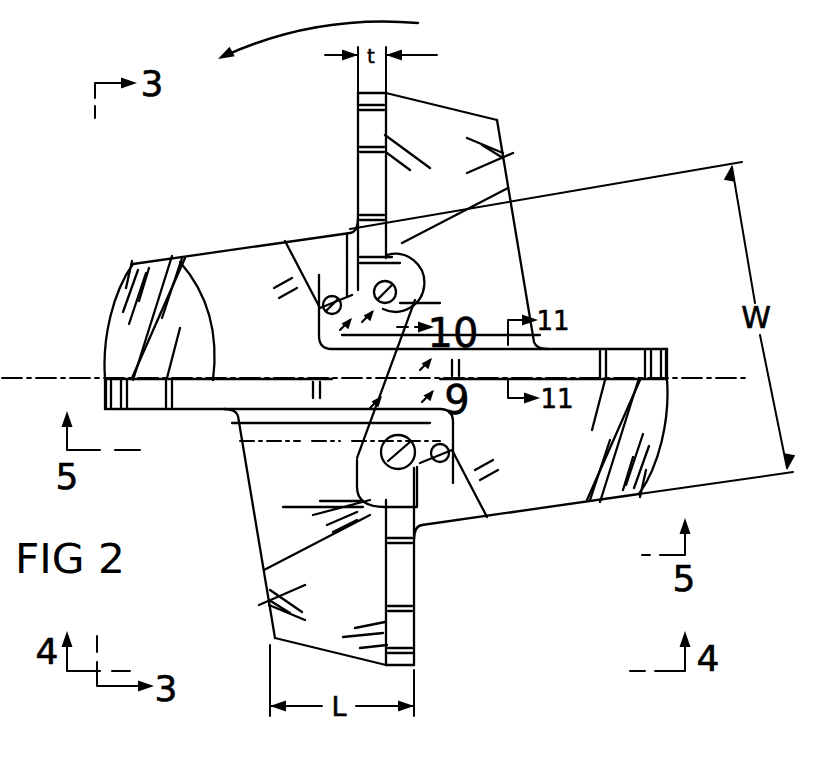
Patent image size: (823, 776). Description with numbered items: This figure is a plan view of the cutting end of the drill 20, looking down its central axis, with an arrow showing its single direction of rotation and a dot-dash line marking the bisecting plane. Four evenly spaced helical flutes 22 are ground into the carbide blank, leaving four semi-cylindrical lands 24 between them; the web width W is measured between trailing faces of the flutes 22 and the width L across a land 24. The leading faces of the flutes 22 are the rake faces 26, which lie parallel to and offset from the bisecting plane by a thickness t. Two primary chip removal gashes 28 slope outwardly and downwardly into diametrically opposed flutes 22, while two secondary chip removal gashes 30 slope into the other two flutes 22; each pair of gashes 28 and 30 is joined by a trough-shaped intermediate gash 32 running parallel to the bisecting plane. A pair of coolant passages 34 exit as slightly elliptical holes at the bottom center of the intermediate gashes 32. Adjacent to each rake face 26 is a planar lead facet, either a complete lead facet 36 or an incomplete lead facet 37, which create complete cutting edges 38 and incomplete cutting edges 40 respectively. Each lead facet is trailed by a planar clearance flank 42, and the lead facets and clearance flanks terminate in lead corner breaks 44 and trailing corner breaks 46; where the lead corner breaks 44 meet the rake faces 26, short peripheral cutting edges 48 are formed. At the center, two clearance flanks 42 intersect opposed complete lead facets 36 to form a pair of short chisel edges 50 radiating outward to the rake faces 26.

The drill 20 is at (594, 133).
The flutes 22 is at (241, 236).
The land 24 is at (494, 116).
The rake faces 26 is at (356, 128).
The primary chip removal gashes 28 is at (505, 251).
The secondary chip removal gashes 30 is at (325, 252).
The intermediate gash 32 is at (320, 300).
The coolant passages 34 is at (413, 301).
The complete lead facets 36 is at (181, 262).
The incomplete lead facets 37 is at (358, 150).
The complete cutting edges 38 is at (209, 413).
The incomplete cutting edges 40 is at (357, 173).
The clearance flank 42 is at (512, 132).
The lead corner break 44 is at (386, 100).
The trailing corner break 46 is at (445, 97).
The peripheral cutting edges 48 is at (358, 110).
The chisel edges 50 is at (362, 376).